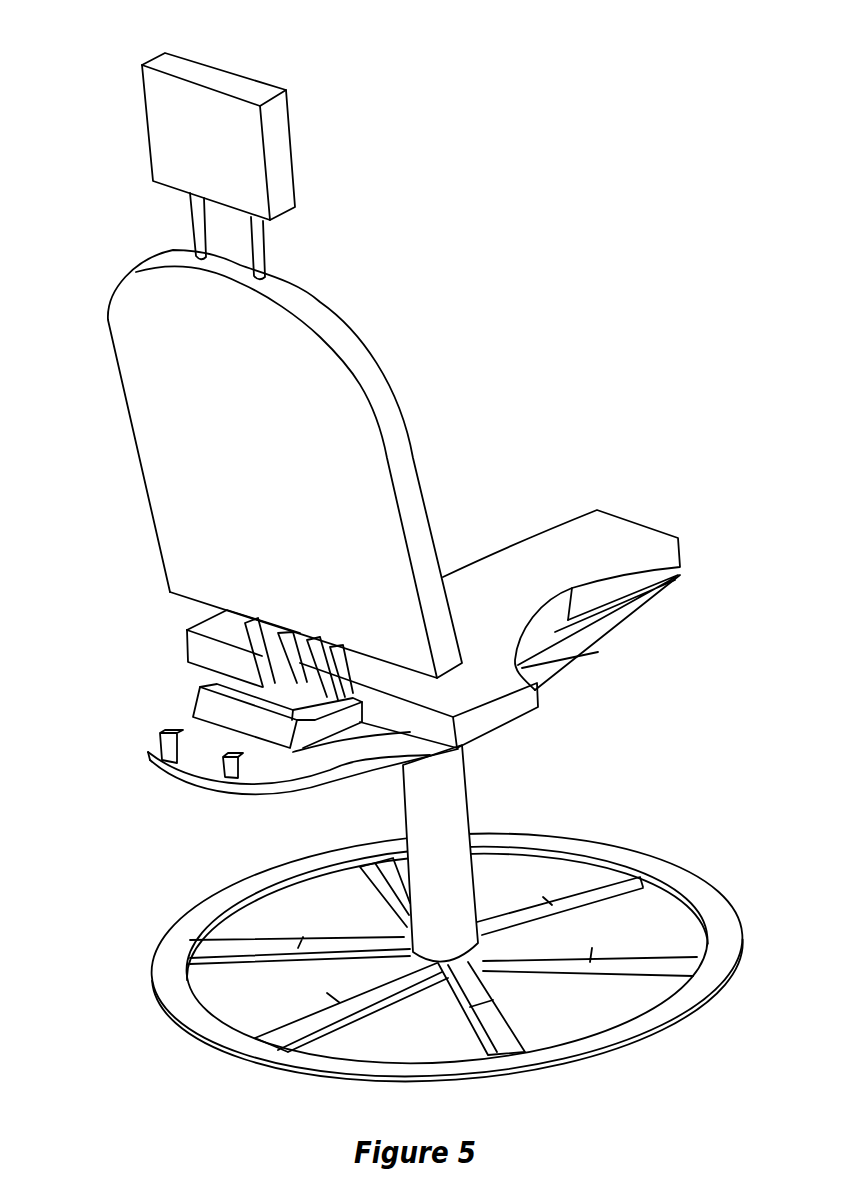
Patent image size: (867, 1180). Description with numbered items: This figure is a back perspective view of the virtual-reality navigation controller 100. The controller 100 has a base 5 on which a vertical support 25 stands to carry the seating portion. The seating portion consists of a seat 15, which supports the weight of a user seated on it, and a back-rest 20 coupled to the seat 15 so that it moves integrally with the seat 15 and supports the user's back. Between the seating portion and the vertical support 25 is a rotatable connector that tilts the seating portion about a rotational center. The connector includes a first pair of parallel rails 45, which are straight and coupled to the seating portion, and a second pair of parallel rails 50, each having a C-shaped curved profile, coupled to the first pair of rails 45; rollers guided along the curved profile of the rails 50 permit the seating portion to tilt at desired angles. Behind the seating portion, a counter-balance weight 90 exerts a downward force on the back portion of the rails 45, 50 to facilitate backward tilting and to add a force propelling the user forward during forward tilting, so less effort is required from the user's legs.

The virtual-reality navigation controller 100 is at (428, 37).
The back-rest 20 is at (182, 485).
The seat 15 is at (517, 567).
The vertical support 25 is at (450, 812).
The base 5 is at (662, 1029).
The counter-balance weight 90 is at (213, 705).
The first pair of parallel rails 45 is at (225, 758).
The second pair of parallel rails 50 is at (265, 775).